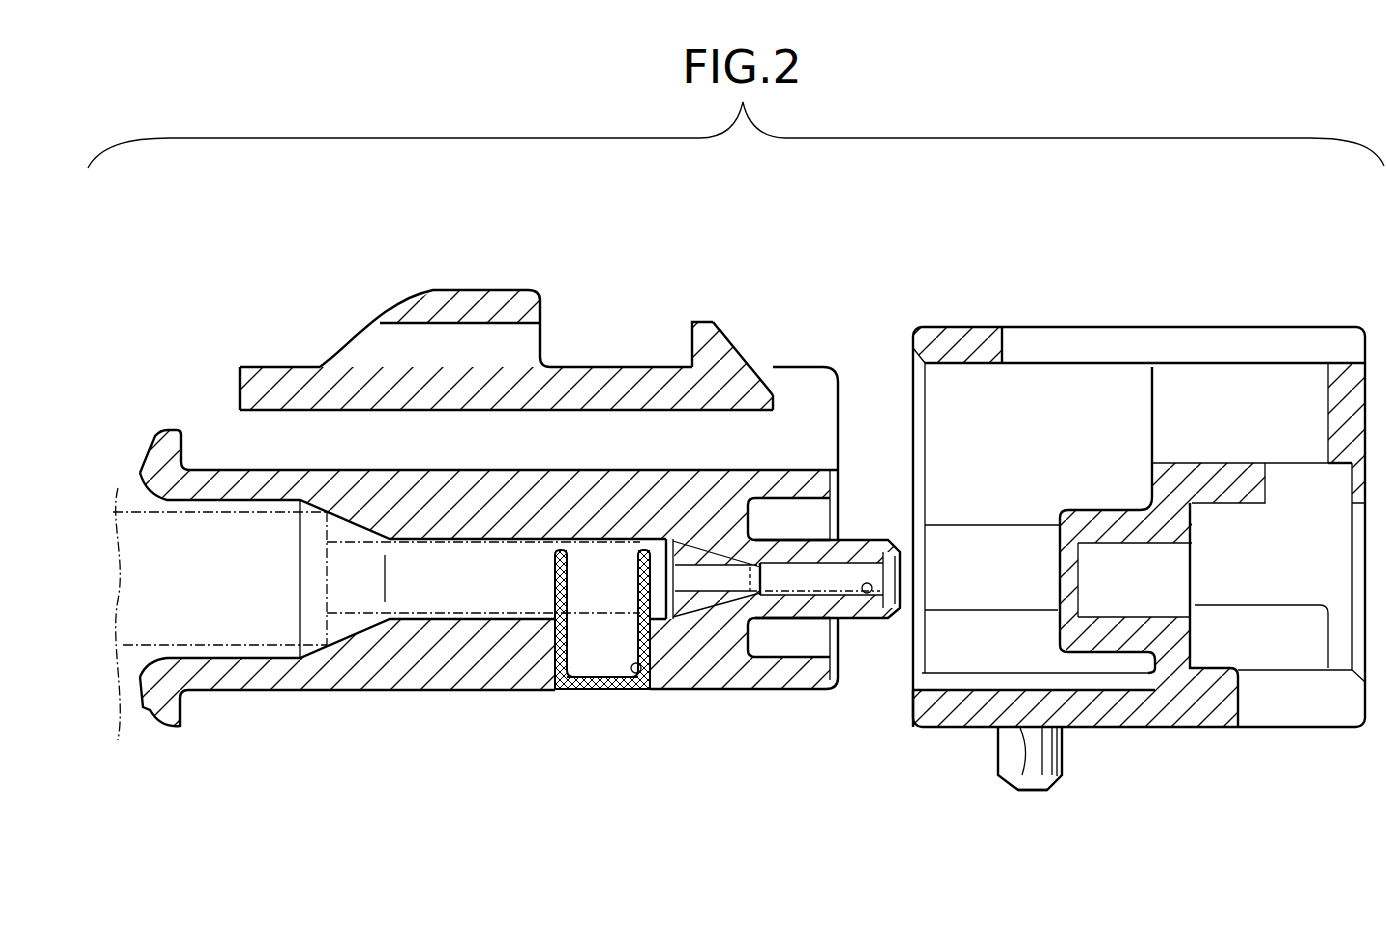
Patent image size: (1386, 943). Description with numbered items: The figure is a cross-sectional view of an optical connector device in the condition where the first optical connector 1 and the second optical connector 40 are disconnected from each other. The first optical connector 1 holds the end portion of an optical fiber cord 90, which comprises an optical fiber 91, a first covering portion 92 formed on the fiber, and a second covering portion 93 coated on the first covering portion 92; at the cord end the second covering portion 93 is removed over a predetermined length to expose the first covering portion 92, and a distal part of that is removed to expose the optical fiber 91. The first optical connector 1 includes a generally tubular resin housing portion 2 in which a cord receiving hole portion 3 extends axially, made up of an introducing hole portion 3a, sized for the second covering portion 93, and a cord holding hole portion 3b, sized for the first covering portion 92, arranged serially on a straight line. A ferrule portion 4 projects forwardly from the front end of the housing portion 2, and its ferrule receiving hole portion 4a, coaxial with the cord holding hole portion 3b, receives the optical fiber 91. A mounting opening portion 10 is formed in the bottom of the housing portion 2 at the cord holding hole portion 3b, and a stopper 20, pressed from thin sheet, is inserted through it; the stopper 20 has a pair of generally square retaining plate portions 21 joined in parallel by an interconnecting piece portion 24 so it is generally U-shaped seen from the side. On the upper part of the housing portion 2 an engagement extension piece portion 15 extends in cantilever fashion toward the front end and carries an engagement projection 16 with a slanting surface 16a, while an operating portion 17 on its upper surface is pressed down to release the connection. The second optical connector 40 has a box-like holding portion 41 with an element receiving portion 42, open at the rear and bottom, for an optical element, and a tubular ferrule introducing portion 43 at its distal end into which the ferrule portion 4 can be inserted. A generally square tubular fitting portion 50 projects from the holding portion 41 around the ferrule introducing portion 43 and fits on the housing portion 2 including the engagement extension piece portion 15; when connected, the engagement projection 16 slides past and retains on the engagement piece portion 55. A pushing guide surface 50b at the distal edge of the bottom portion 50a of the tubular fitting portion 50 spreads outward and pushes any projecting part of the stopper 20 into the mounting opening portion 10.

The first optical connector 1 is at (535, 252).
The housing portion 2 is at (740, 690).
The cord receiving hole portion 3 is at (272, 780).
The introducing hole portion 3a is at (277, 643).
The cord holding hole portion 3b is at (417, 600).
The ferrule portion 4 is at (860, 618).
The ferrule receiving hole portion 4a is at (867, 594).
The mounting opening portion 10 is at (637, 692).
The engagement extension piece portion 15 is at (626, 367).
The engagement projection 16 is at (706, 322).
The slanting surface 16a is at (735, 346).
The operating portion 17 is at (484, 290).
The stopper 20 is at (613, 780).
The retaining plate portions 21 is at (555, 645).
The interconnecting piece portion 24 is at (580, 689).
The second optical connector 40 is at (1214, 296).
The holding portion 41 is at (1210, 463).
The element receiving portion 42 is at (1250, 580).
The ferrule introducing portion 43 is at (1085, 510).
The tubular fitting portion 50 is at (960, 728).
The bottom portion 50a is at (1013, 791).
The pushing guide surface 50b is at (913, 695).
The engagement piece portion 55 is at (957, 327).
The optical fiber cord 90 is at (129, 684).
The optical fiber 91 is at (802, 582).
The first covering portion 92 is at (468, 620).
The second covering portion 93 is at (234, 646).